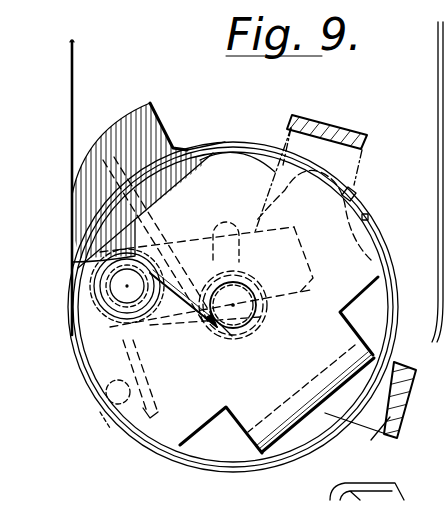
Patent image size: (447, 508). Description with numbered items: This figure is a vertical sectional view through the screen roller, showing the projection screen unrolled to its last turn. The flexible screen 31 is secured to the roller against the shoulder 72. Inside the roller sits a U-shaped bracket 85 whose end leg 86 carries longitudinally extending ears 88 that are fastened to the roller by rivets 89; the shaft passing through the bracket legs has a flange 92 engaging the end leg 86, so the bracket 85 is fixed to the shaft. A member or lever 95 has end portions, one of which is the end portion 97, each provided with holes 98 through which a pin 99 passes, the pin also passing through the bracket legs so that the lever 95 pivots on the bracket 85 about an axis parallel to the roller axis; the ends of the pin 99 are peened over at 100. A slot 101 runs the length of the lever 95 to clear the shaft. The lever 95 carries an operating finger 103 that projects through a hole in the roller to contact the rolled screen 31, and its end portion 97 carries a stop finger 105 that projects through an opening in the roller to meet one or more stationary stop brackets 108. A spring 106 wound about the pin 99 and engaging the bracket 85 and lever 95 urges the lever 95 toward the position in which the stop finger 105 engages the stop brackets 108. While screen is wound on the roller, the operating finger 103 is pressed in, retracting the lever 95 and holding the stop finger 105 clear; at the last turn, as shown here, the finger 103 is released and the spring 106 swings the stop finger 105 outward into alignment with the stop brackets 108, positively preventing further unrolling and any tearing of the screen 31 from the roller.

The flexible screen 31 is at (73, 57).
The shoulder 72 is at (367, 217).
The U-shaped bracket 85 is at (270, 452).
The end leg 86 is at (160, 437).
The ears 88 is at (90, 458).
The rivets 89 is at (100, 412).
The flange 92 is at (262, 326).
The member or lever 95 is at (268, 298).
The end portion 97 is at (187, 150).
The holes 98 is at (240, 290).
The pin 99 is at (190, 330).
The peened-over ends 100 is at (100, 308).
The slot 101 is at (257, 225).
The operating finger 103 is at (122, 190).
The stop finger 105 is at (160, 126).
The spring 106 is at (137, 373).
The stop brackets 108 is at (330, 122).